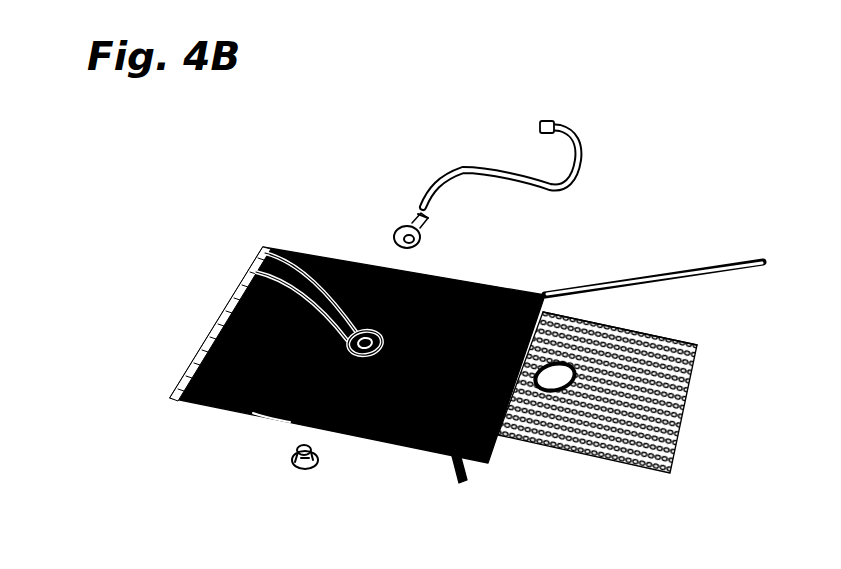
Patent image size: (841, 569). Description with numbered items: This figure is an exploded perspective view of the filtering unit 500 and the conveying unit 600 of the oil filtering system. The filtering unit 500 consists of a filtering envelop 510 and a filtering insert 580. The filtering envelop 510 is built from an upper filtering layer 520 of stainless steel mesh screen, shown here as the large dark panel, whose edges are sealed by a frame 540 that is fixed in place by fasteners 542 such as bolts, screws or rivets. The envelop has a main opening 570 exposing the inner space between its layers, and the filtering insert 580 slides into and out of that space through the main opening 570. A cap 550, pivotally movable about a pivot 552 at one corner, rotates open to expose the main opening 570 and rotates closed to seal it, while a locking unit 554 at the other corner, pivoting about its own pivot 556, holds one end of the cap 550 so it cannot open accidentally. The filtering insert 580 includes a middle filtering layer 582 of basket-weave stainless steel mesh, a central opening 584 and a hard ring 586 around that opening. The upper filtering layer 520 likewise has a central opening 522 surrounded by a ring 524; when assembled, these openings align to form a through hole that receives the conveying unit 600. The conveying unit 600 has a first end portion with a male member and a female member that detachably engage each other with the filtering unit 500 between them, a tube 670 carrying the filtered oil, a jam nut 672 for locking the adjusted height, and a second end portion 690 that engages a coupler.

The filtering unit 500 is at (458, 274).
The filtering envelop 510 is at (163, 398).
The upper filtering layer 520 is at (210, 373).
The opening 522 is at (253, 273).
The ring 524 is at (263, 250).
The frame 540 is at (290, 422).
The fasteners 542 is at (253, 413).
The cap 550 is at (740, 260).
The pivot 552 is at (545, 293).
The locking unit 554 is at (463, 482).
The pivot 556 is at (453, 452).
The main opening 570 is at (493, 450).
The filtering insert 580 is at (695, 390).
The middle filtering layer 582 is at (697, 343).
The opening 584 is at (555, 377).
The ring 586 is at (553, 390).
The conveying unit 600 is at (483, 160).
The tube 670 is at (581, 160).
The jam nut 672 is at (423, 207).
The second end portion 690 is at (546, 126).